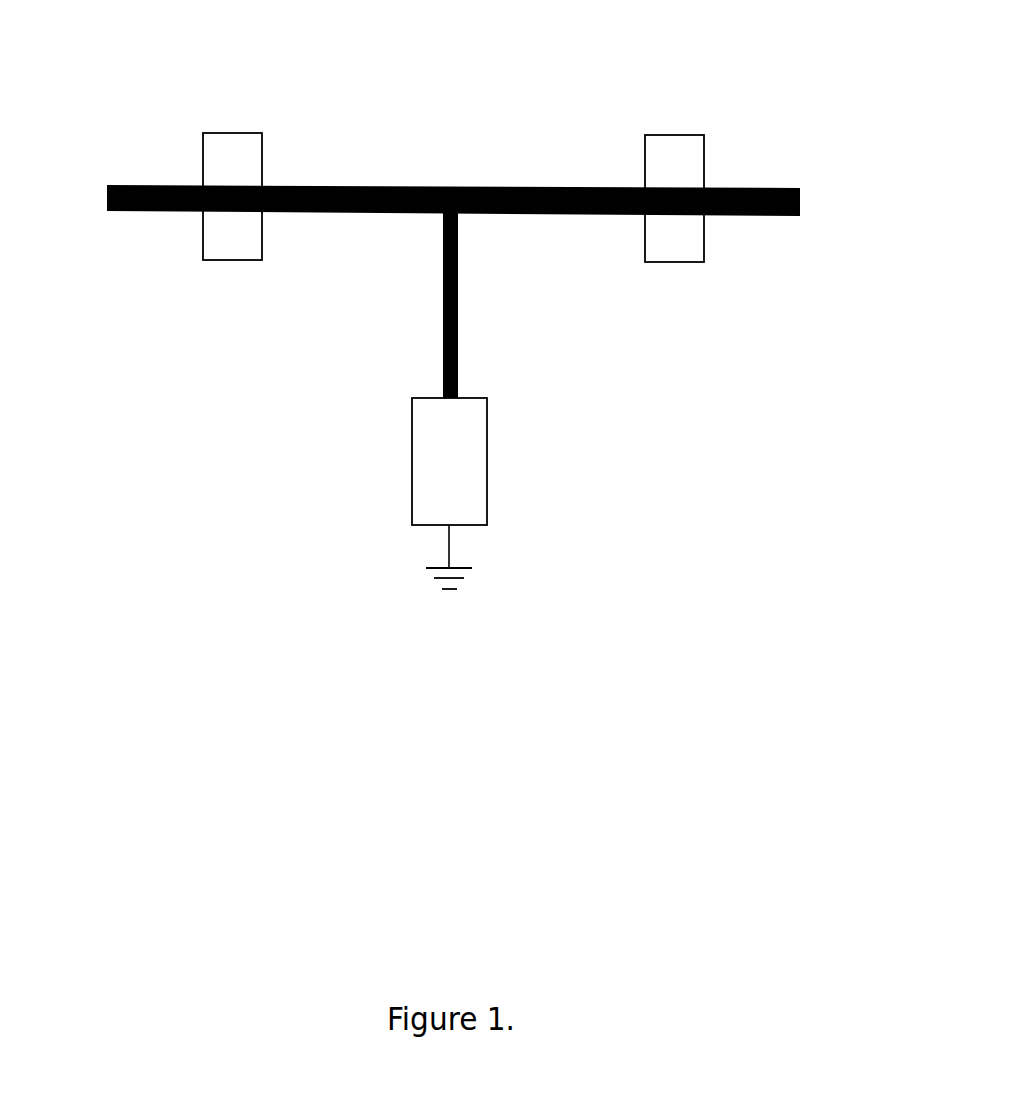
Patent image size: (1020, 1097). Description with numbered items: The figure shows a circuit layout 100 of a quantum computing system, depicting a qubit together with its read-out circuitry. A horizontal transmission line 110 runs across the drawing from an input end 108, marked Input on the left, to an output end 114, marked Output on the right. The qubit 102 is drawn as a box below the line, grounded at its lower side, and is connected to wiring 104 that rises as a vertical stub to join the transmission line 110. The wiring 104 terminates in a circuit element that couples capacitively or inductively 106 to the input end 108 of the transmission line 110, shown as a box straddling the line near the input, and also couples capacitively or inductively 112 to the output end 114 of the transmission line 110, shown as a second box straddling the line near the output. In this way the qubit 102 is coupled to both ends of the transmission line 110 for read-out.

The circuit layout 100 is at (745, 687).
The qubit 102 is at (488, 457).
The wiring 104 is at (458, 268).
The capacitive or inductive coupling element 106 is at (242, 260).
The input end 108 is at (105, 240).
The transmission line 110 is at (394, 185).
The capacitive or inductive coupling element 112 is at (670, 262).
The output end 114 is at (796, 234).